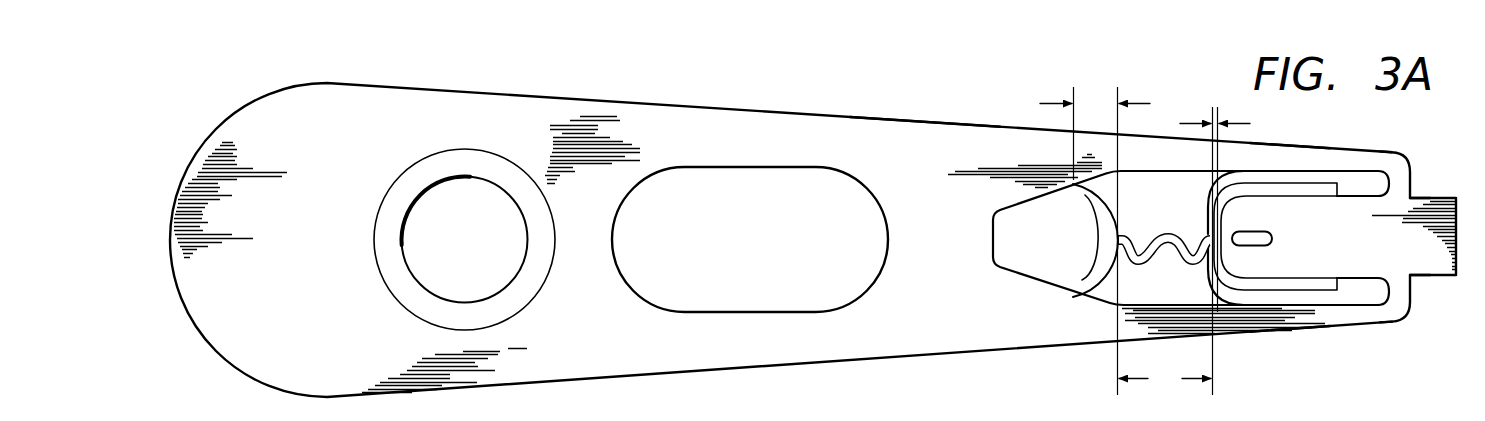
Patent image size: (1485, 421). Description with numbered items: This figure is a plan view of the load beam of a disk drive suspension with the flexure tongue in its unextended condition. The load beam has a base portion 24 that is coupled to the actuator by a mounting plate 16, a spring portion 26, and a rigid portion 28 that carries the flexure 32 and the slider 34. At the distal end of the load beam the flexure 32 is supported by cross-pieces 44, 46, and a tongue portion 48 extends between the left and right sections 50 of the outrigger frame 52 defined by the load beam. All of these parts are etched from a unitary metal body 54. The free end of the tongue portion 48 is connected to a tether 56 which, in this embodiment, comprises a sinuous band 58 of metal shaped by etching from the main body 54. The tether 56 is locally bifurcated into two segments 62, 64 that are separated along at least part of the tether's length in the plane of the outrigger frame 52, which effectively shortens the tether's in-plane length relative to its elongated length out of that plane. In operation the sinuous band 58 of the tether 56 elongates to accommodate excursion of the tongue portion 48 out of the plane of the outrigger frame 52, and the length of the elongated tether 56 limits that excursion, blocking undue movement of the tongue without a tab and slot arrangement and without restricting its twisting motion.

The mounting plate 16 is at (470, 163).
The base portion 24 is at (302, 110).
The spring portion 26 is at (712, 137).
The rigid portion 28 is at (1012, 142).
The flexure 32 is at (1362, 360).
The slider 34 is at (1320, 188).
The cross-piece 44 is at (1398, 177).
The cross-piece 46 is at (1397, 307).
The tongue portion 48 is at (1331, 248).
The left and right sections 50 is at (1283, 160).
The outrigger frame 52 is at (1174, 107).
The unitary metal body 54 is at (918, 138).
The tether 56 is at (1138, 274).
The sinuous band 58 is at (1138, 236).
The tether segment 62 is at (1093, 197).
The tether segment 64 is at (1083, 275).